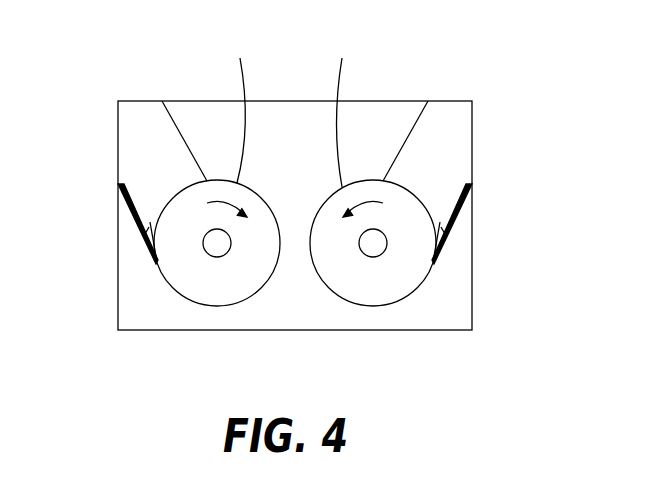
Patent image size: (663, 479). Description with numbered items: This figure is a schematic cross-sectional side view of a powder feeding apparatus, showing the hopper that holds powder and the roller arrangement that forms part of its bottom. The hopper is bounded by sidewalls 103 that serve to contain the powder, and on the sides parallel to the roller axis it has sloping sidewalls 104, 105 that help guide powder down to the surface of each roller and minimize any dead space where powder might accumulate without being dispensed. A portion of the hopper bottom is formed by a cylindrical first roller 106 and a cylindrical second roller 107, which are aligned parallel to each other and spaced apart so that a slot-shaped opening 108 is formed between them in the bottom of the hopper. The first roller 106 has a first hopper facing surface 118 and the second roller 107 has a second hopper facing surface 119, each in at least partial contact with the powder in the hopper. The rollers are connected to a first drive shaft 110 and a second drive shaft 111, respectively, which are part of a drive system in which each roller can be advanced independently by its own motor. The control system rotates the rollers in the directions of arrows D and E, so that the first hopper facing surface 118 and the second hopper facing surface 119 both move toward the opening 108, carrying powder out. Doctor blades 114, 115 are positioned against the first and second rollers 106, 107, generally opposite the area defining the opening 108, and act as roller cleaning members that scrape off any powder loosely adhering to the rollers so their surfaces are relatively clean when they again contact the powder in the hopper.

The sidewalls 103 is at (290, 122).
The sloping sidewall 104 is at (181, 134).
The sloping sidewall 105 is at (405, 142).
The first roller 106 is at (217, 307).
The second roller 107 is at (387, 307).
The slot-shaped opening 108 is at (295, 252).
The first drive shaft 110 is at (217, 248).
The second drive shaft 111 is at (377, 248).
The doctor blade 114 is at (147, 235).
The doctor blade 115 is at (445, 238).
The first hopper facing surface 118 is at (239, 107).
The second hopper facing surface 119 is at (344, 109).